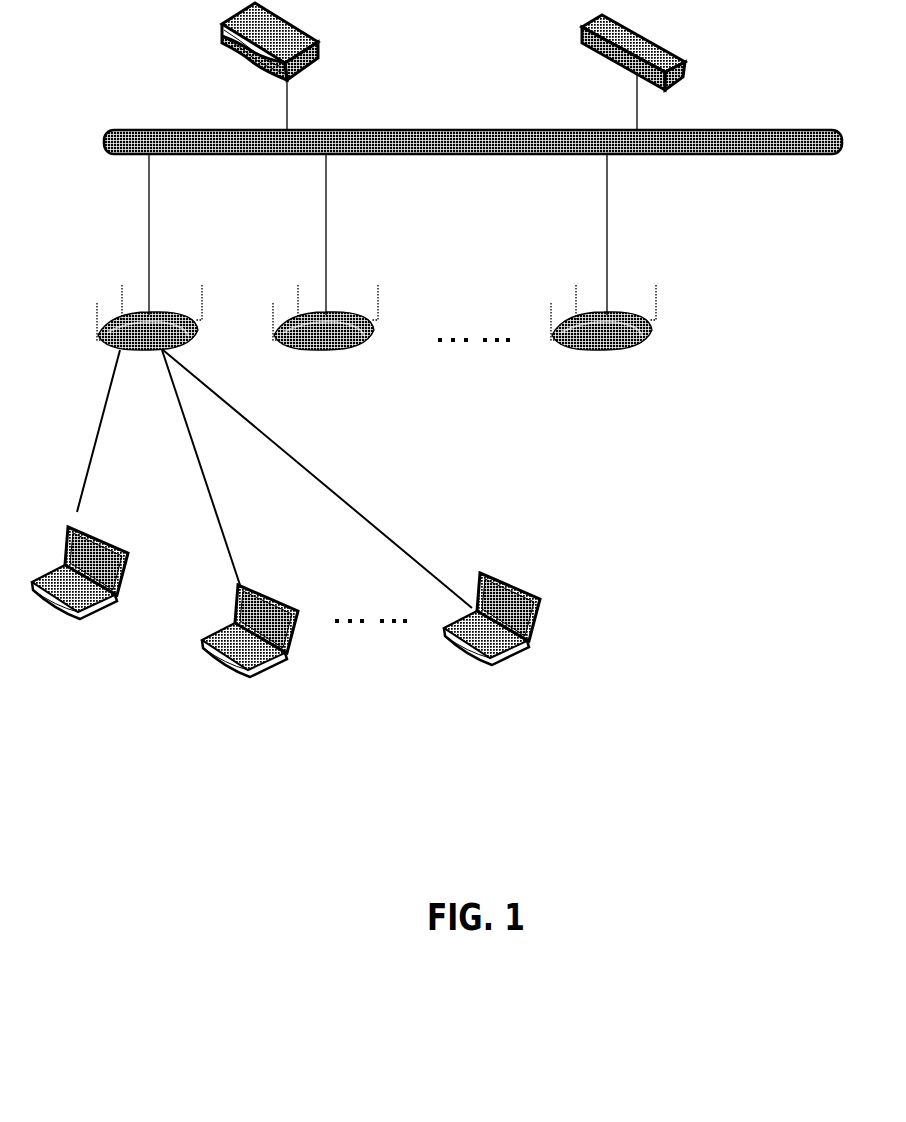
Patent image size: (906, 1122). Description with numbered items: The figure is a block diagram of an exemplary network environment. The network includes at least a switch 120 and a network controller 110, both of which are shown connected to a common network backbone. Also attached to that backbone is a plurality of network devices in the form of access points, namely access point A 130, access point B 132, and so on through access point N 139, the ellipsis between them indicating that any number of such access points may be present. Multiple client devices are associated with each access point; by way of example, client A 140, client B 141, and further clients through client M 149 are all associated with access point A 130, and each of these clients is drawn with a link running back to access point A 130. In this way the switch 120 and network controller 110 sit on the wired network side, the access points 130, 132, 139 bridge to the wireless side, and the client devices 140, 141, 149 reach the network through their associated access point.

The network controller 110 is at (400, 57).
The switch 120 is at (743, 57).
The access point A 130 is at (166, 400).
The access point B 132 is at (342, 400).
The access point N 139 is at (612, 400).
The client A 140 is at (82, 691).
The client B 141 is at (242, 736).
The client M 149 is at (523, 721).